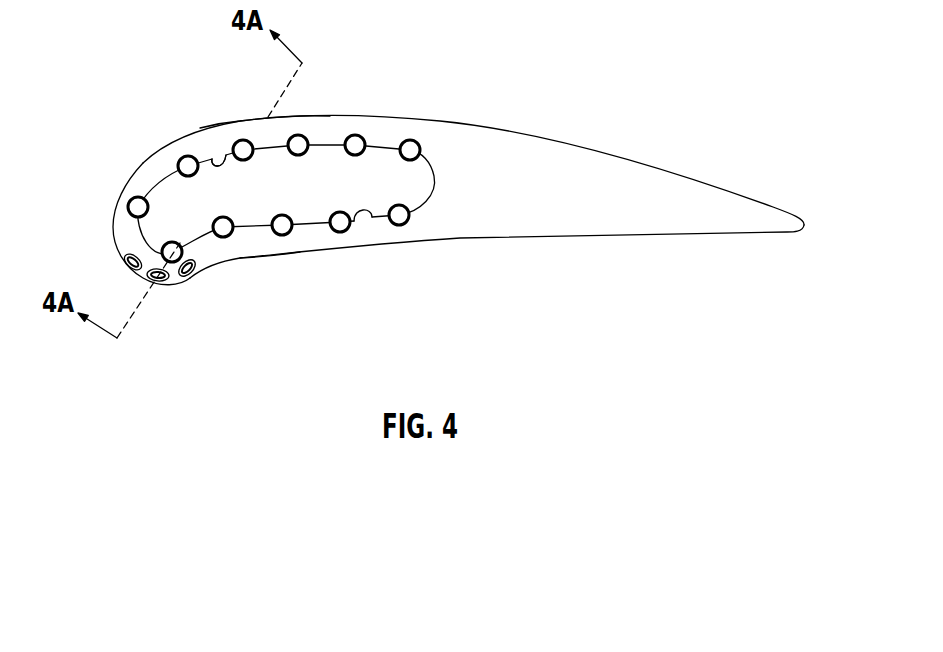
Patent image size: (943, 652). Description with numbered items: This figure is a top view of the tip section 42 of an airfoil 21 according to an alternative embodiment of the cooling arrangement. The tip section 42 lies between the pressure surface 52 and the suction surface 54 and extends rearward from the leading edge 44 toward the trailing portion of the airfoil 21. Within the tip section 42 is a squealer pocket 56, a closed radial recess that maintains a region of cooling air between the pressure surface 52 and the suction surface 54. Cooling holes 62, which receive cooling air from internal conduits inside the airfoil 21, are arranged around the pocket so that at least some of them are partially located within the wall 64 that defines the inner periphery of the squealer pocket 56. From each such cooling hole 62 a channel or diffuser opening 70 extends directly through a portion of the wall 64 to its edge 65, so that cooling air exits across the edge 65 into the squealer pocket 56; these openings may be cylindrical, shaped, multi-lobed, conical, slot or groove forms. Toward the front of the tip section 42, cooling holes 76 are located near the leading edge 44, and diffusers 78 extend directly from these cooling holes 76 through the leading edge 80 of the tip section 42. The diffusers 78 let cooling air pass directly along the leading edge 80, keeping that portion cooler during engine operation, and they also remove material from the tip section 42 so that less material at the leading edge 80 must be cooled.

The airfoil 21 is at (96, 345).
The tip section 42 is at (423, 198).
The leading edge 44 is at (143, 163).
The pressure surface 52 is at (547, 238).
The suction surface 54 is at (488, 127).
The squealer pocket 56 is at (400, 183).
The cooling holes 62 is at (392, 208).
The wall 64 is at (263, 133).
The edge 65 is at (218, 157).
The diffuser opening 70 is at (300, 135).
The cooling holes 76 is at (126, 264).
The diffusers 78 is at (146, 274).
The leading edge 80 is at (110, 216).